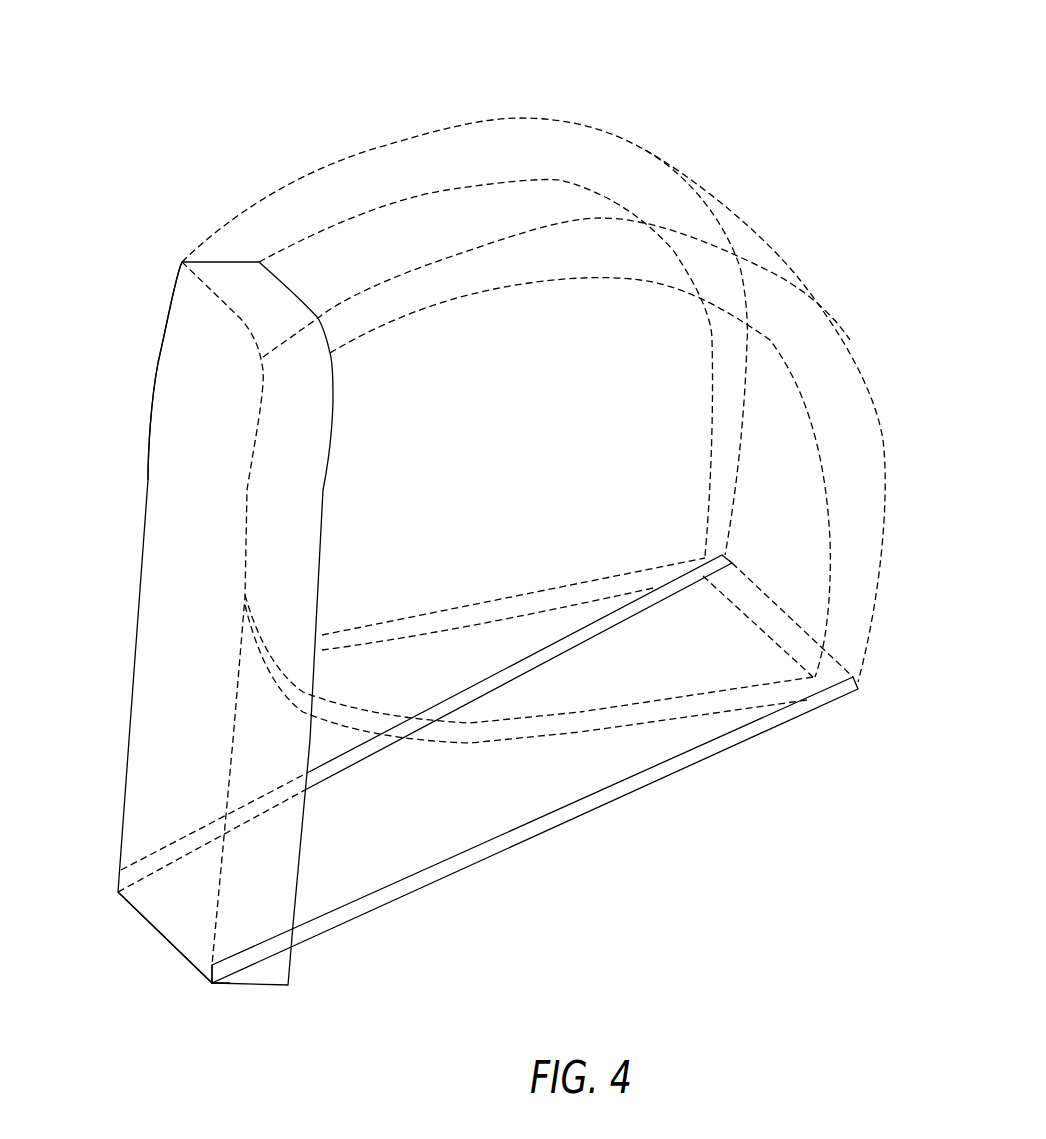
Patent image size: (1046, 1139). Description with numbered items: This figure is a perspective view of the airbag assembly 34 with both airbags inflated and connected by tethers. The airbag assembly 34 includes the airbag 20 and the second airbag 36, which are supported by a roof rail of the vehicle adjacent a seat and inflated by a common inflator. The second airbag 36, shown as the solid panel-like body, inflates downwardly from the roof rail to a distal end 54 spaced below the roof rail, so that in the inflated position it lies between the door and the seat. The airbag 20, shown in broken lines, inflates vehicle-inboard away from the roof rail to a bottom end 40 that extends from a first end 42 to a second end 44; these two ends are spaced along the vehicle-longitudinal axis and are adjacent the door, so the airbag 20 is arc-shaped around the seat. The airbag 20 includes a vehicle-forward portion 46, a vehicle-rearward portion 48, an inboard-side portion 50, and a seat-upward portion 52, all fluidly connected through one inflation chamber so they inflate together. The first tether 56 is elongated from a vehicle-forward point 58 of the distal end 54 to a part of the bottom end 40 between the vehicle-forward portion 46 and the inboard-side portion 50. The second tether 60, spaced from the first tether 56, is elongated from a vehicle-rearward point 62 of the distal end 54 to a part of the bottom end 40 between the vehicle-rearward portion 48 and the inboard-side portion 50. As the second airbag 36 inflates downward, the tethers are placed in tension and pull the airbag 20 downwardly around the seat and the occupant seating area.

The airbag 20 is at (773, 247).
The airbag assembly 34 is at (220, 168).
The second airbag 36 is at (153, 709).
The bottom end 40 is at (793, 640).
The first end 42 is at (150, 410).
The second end 44 is at (245, 497).
The vehicle-forward portion 46 is at (676, 356).
The vehicle-rearward portion 48 is at (637, 680).
The inboard-side portion 50 is at (891, 400).
The seat-upward portion 52 is at (592, 70).
The distal end 54 is at (152, 935).
The first tether 56 is at (585, 626).
The vehicle-forward point 58 is at (118, 890).
The second tether 60 is at (762, 735).
The vehicle-rearward point 62 is at (212, 975).